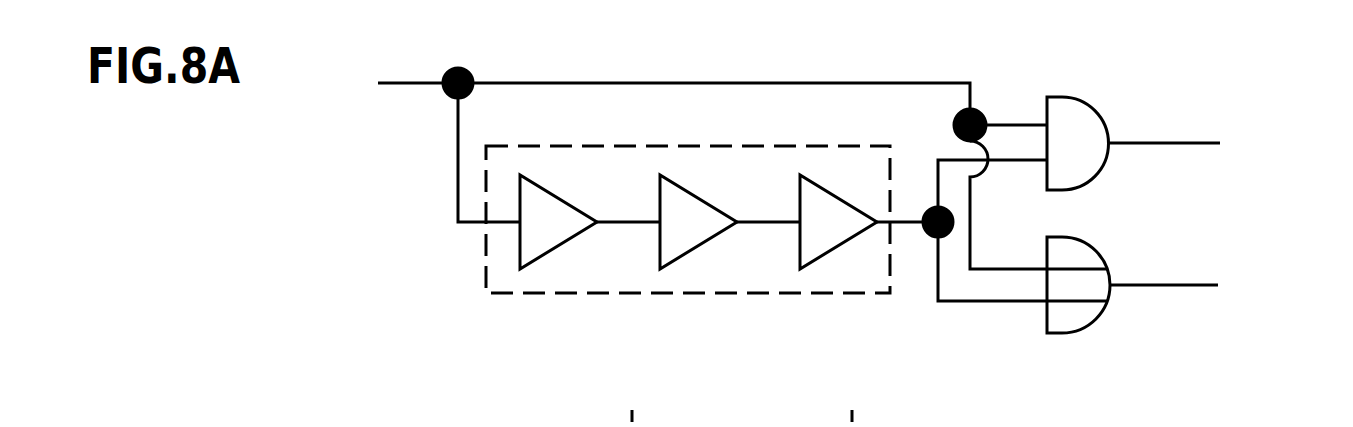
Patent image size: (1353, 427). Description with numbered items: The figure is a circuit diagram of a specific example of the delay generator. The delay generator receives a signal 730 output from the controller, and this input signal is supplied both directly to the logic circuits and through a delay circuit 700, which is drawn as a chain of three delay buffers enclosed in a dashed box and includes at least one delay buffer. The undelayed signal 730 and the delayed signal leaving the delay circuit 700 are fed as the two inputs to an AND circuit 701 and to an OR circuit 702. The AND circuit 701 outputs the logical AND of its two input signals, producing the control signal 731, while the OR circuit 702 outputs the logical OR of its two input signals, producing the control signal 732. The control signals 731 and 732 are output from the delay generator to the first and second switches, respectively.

The signal 730 is at (701, 168).
The delay circuit 700 is at (625, 293).
The AND circuit 701 is at (1085, 103).
The OR circuit 702 is at (1080, 328).
The control signal 731 is at (1200, 147).
The control signal 732 is at (1201, 292).